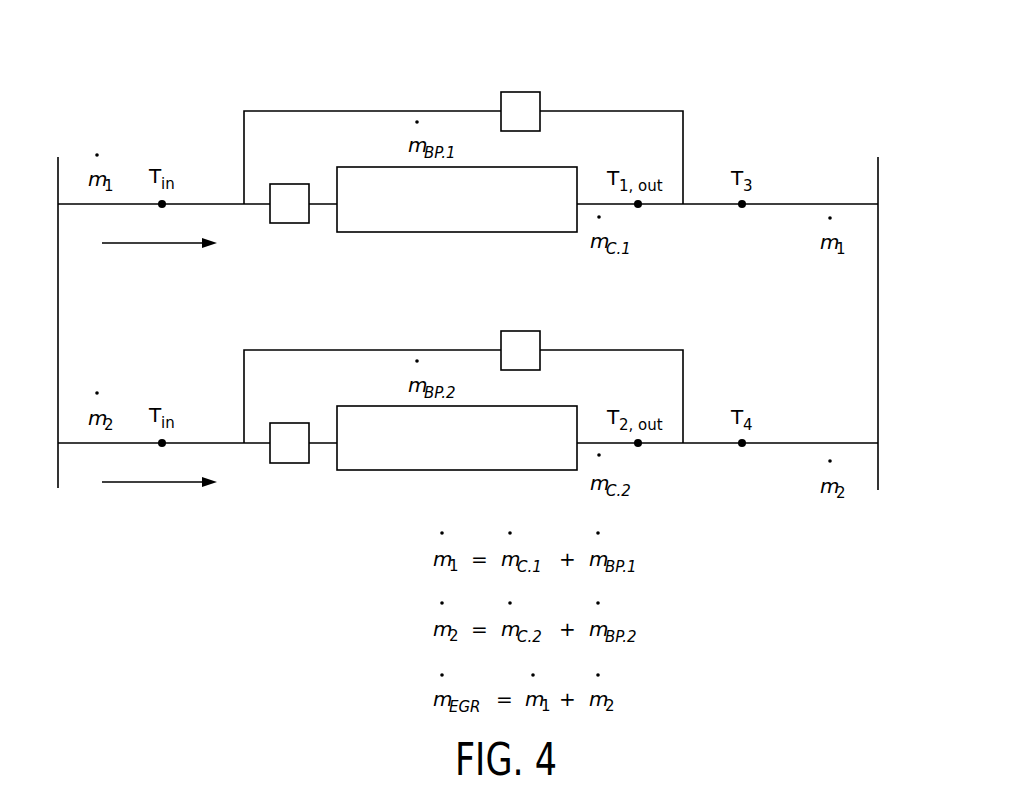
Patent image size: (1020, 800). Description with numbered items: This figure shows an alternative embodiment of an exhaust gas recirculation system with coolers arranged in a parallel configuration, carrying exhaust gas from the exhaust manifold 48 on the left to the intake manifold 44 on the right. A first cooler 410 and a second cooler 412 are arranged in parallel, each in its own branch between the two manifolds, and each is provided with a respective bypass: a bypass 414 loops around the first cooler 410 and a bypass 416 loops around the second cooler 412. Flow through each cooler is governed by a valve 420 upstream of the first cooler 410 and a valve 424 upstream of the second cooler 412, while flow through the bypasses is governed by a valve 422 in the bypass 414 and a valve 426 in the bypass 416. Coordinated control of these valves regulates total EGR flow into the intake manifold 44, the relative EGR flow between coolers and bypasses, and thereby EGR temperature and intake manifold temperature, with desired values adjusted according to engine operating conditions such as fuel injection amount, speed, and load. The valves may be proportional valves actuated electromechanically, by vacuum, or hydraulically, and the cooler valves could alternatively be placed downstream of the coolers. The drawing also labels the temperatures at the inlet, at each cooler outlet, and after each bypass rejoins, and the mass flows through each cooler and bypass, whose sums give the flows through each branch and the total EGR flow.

The intake manifold 44 is at (878, 307).
The exhaust manifold 48 is at (58, 306).
The first cooler 410 is at (474, 216).
The second cooler 412 is at (474, 453).
The bypass 414 is at (338, 110).
The bypass 416 is at (338, 349).
The valve 420 is at (289, 184).
The valve 422 is at (522, 92).
The valve 424 is at (289, 423).
The valve 426 is at (522, 331).